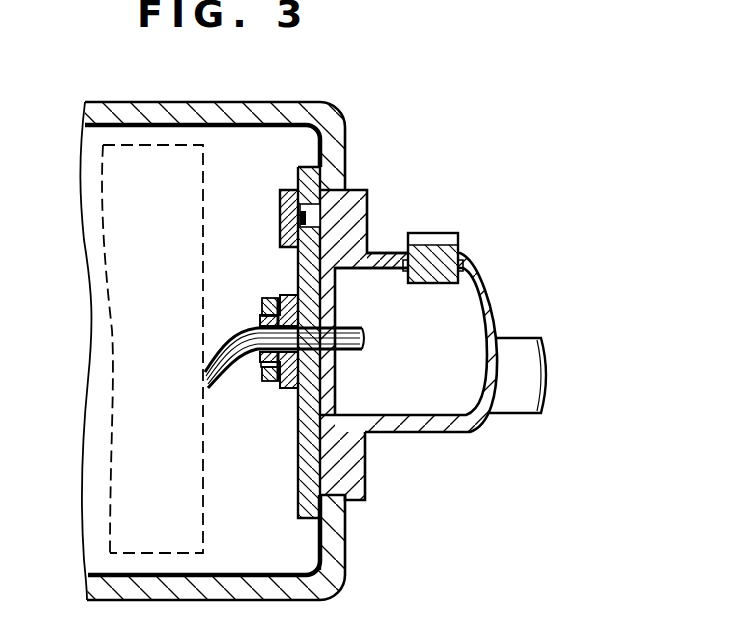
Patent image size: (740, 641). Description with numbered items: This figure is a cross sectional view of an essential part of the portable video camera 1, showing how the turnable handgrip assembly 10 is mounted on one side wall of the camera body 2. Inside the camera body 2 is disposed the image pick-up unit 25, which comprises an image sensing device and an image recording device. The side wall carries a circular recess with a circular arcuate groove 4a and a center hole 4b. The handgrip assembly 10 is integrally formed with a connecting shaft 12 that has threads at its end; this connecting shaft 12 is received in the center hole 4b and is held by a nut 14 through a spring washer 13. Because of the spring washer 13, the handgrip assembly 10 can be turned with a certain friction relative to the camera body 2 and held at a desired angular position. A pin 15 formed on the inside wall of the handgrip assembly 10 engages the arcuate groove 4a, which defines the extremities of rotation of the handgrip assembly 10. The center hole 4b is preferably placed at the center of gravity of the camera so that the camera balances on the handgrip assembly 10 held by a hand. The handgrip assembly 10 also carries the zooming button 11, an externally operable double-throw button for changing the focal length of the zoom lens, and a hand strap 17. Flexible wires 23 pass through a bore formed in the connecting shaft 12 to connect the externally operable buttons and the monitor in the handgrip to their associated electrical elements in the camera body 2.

The portable video camera 1 is at (334, 80).
The camera body 2 is at (358, 135).
The circular arcuate groove 4a is at (302, 207).
The center hole 4b is at (332, 360).
The handgrip assembly 10 is at (498, 258).
The zooming button 11 is at (434, 233).
The connecting shaft 12 is at (260, 327).
The spring washer 13 is at (276, 385).
The nut 14 is at (265, 380).
The pin 15 is at (300, 224).
The hand strap 17 is at (542, 403).
The flexible wires 23 is at (347, 326).
The image pick-up unit 25 is at (192, 508).